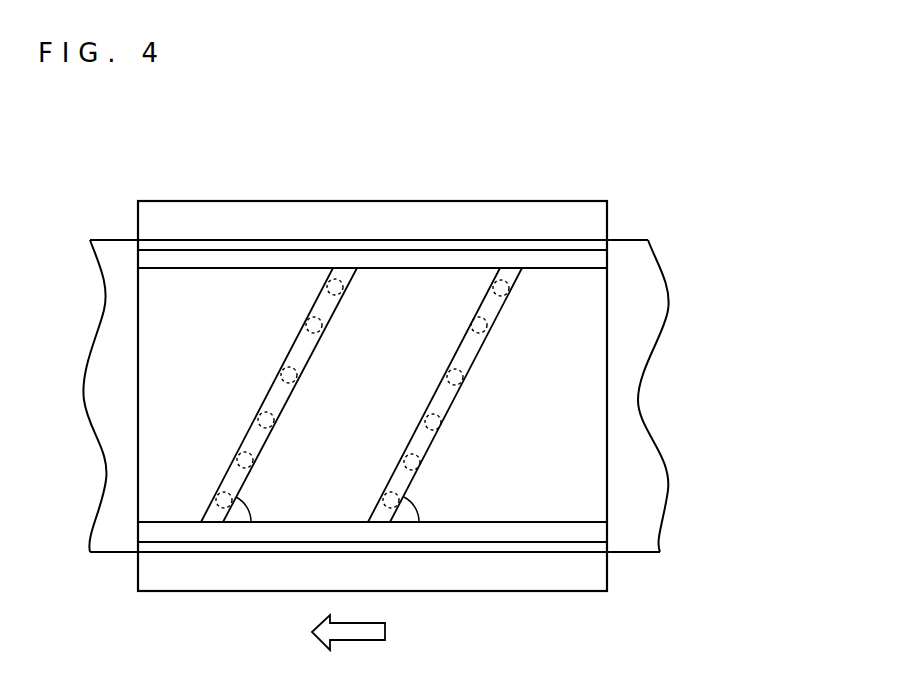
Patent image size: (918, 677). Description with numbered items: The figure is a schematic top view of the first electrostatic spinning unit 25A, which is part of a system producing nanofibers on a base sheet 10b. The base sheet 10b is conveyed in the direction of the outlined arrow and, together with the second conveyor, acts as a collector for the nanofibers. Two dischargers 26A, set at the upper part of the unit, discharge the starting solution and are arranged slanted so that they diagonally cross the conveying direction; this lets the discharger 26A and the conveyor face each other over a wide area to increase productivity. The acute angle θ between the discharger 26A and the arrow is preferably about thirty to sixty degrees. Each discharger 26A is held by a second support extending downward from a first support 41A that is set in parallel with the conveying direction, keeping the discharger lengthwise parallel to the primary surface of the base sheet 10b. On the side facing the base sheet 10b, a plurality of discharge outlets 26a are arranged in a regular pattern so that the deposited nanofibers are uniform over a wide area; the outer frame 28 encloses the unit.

The first electrostatic spinning unit 25A is at (690, 107).
The housing 28 is at (199, 574).
The base sheet 10b is at (651, 277).
The first support 41A is at (238, 263).
The discharger 26A is at (302, 354).
The discharge outlets 26a is at (340, 288).